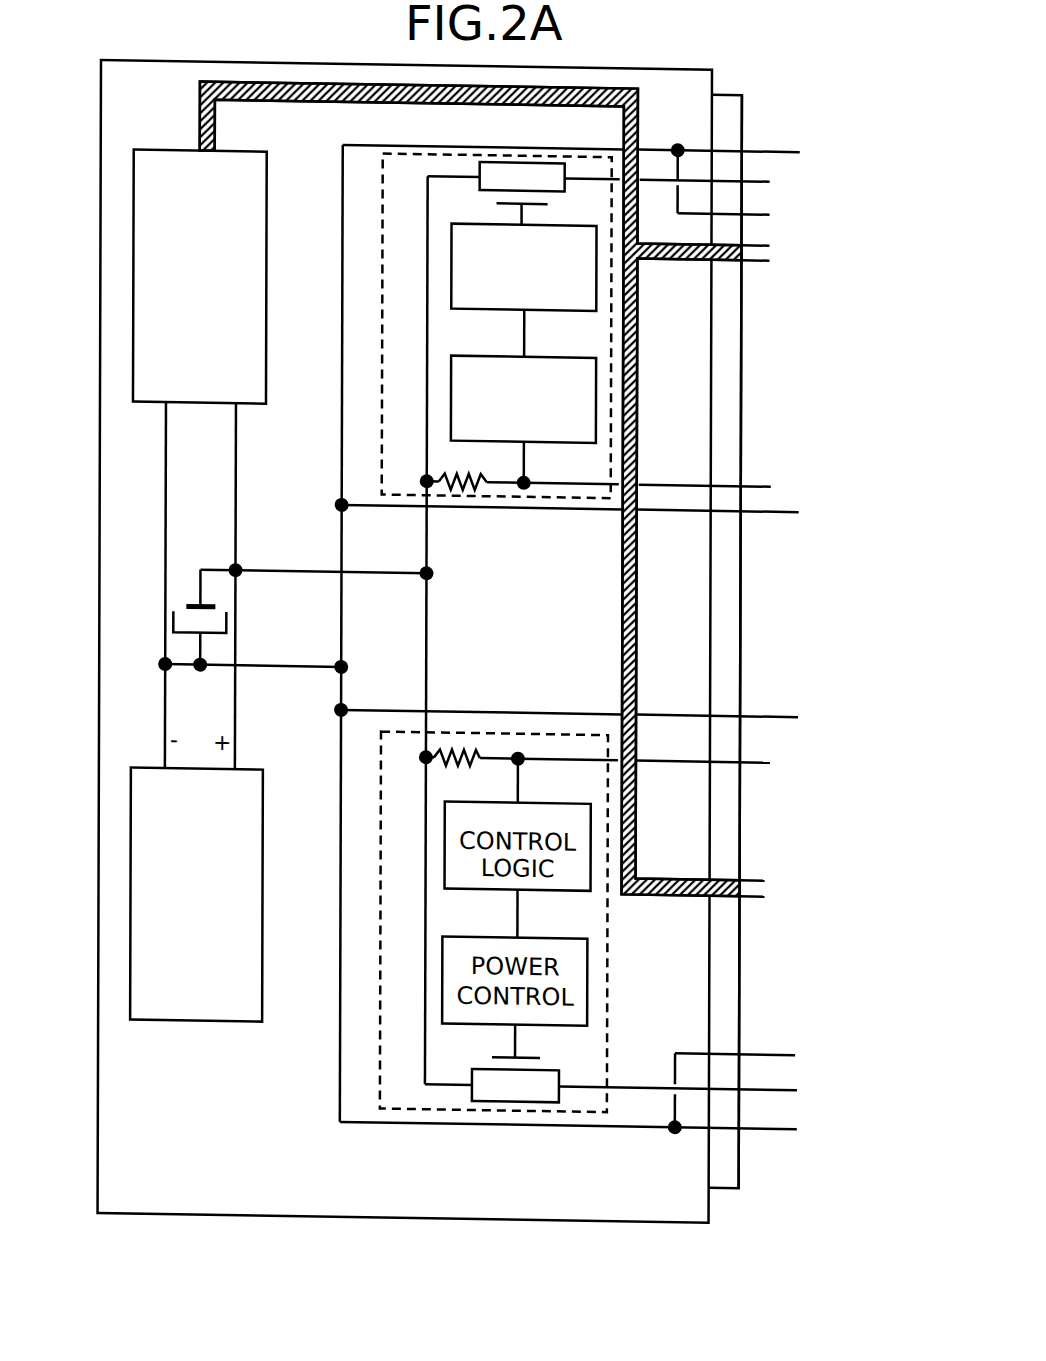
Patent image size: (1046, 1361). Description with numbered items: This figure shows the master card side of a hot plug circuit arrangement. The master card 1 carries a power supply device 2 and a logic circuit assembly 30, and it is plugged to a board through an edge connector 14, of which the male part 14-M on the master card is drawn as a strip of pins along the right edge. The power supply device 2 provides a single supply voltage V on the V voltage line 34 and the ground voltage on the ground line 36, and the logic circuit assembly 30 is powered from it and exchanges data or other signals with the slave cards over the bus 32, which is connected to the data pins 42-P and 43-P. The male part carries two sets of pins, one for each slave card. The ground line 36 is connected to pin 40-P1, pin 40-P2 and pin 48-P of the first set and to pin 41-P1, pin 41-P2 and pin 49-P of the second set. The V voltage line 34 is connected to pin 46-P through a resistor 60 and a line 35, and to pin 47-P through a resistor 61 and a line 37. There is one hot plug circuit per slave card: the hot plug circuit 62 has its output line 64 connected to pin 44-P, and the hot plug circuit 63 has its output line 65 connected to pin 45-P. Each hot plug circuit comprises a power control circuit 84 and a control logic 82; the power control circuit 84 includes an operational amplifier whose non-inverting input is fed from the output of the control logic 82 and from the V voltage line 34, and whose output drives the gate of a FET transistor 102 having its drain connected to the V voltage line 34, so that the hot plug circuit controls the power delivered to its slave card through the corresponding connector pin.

The master card 1 is at (93, 1207).
The power supply device 2 is at (196, 895).
The edge connector 14 is at (802, 690).
The male part of connector 14-M is at (728, 1160).
The logic circuit assembly 30 is at (200, 277).
The bus 32 is at (470, 489).
The V voltage line 34 is at (303, 604).
The line 35 is at (568, 475).
The ground line 36 is at (327, 664).
The line 37 is at (593, 756).
The pin 40-P 40-P1 is at (582, 147).
The pin 40-P 40-P2 is at (577, 521).
The pin 41-P 41-P1 is at (577, 1115).
The pin 41-P 41-P2 is at (576, 702).
The pin 42-P is at (773, 236).
The pin 43-P is at (771, 873).
The pin 44-P is at (723, 166).
The pin 45-P is at (678, 1073).
The pin 46-P is at (721, 469).
The pin 47-P is at (719, 746).
The pin 48-P is at (742, 198).
The pin 49-P is at (736, 1076).
The resistor 60 is at (486, 465).
The resistor 61 is at (471, 768).
The hot plug circuit 62 is at (369, 321).
The hot plug circuit 63 is at (369, 898).
The output line 64 is at (594, 163).
The output line 65 is at (630, 1077).
The control logic 82 is at (490, 349).
The power control circuit 84 is at (578, 211).
The FET transistor 102 is at (478, 183).